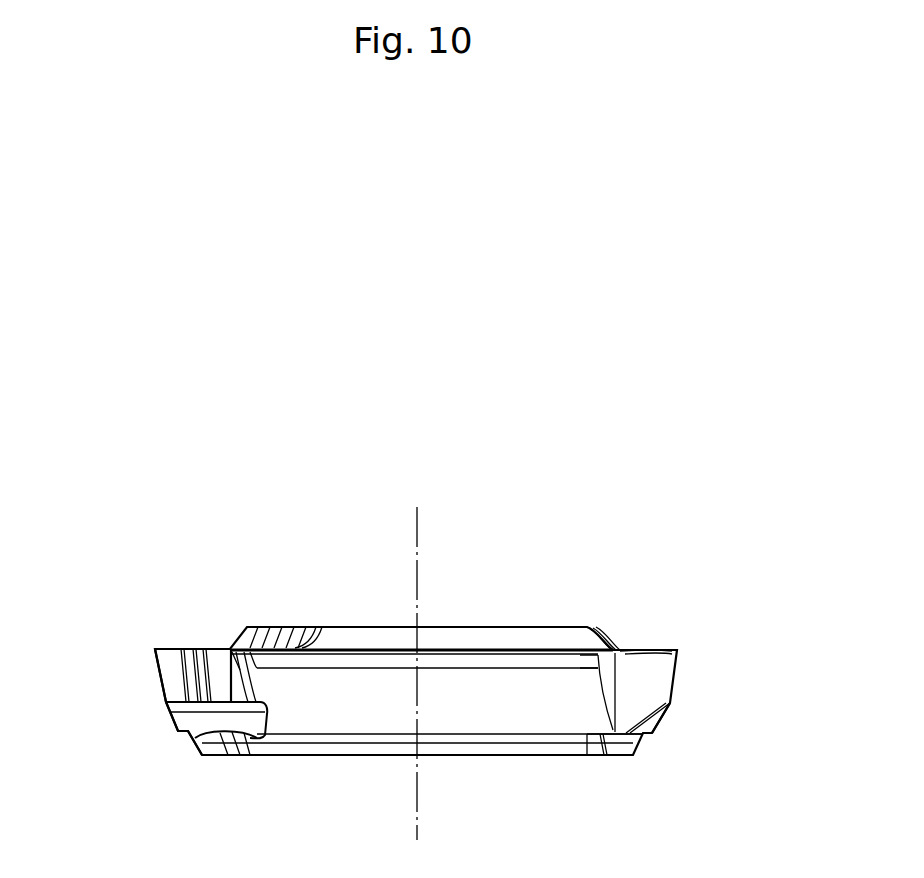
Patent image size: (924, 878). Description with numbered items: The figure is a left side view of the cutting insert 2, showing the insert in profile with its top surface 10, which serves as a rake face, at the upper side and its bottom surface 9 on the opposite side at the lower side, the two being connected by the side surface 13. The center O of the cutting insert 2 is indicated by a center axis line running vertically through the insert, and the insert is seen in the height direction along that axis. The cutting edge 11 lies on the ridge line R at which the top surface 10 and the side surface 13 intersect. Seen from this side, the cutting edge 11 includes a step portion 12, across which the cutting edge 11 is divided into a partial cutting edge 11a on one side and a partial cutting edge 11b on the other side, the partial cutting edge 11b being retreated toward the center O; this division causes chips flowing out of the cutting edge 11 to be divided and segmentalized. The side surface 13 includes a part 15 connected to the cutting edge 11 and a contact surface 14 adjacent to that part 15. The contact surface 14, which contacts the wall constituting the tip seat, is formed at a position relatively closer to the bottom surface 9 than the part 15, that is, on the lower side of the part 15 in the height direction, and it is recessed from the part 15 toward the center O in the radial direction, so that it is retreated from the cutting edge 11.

The cutting insert 2 is at (469, 627).
The bottom surface 9 is at (603, 757).
The top surface 10 is at (573, 627).
The cutting edge 11 is at (265, 512).
The partial cutting edge 11a is at (165, 648).
The partial cutting edge 11b is at (215, 648).
The step portion 12 is at (193, 648).
The side surface 13 is at (66, 653).
The contact surface 14 is at (190, 722).
The part of the side surface 15 is at (170, 678).
The ridge line R is at (337, 648).
The center O is at (417, 656).